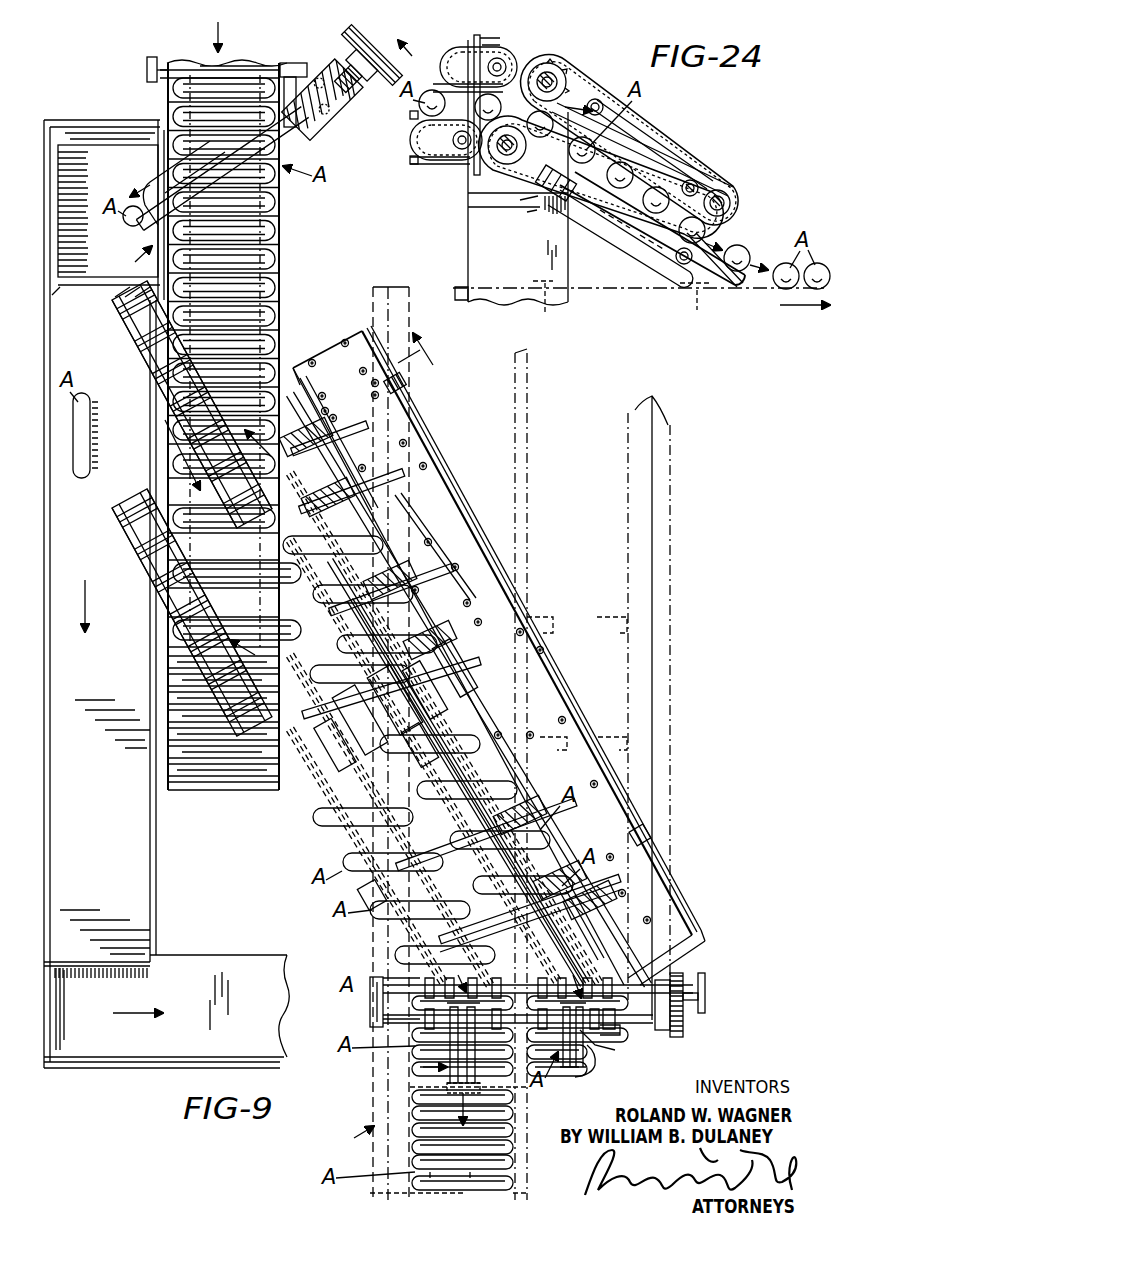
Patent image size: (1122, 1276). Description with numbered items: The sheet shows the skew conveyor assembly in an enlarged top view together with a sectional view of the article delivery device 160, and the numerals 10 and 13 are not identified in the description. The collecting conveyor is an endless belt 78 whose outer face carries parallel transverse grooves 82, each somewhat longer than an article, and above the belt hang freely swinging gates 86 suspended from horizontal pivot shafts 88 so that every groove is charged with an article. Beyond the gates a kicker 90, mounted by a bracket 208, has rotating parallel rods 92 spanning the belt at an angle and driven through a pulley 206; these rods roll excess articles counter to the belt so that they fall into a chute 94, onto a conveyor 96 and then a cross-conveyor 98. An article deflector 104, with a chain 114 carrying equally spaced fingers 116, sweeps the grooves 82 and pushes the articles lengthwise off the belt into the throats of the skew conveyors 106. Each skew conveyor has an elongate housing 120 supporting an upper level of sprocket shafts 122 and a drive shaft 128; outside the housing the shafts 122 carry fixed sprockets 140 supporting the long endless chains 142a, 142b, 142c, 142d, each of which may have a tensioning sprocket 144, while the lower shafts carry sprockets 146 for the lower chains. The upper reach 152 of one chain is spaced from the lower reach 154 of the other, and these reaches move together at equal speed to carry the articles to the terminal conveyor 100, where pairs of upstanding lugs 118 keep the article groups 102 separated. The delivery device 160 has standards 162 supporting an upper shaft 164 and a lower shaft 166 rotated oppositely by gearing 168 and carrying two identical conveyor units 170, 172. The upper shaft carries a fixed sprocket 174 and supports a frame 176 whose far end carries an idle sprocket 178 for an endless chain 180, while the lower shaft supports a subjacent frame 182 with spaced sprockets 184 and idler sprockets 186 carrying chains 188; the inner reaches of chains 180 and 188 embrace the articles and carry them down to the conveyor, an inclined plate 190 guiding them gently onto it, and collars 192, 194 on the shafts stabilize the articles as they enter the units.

In FIG. 9, the article handling apparatus 10 is at (128, 252).
In FIG. 9, the section line indicator 13 is at (371, 409).
In FIG. 9, the endless belt 78 is at (180, 62).
In FIG. 9, the transverse grooves 82 is at (280, 196).
In FIG. 9, the depending gates 86 is at (178, 94).
In FIG. 9, the horizontal pivot shafts 88 is at (150, 57).
In FIG. 9, the kicker 90 is at (322, 84).
In FIG. 9, the rotating parallel rods 92 is at (280, 141).
In FIG. 9, the chute 94 is at (95, 145).
In FIG. 9, the conveyor 96 is at (68, 122).
In FIG. 9, the cross-conveyor 98 is at (138, 1058).
In FIG. 9, the terminal conveyor 100 is at (346, 1135).
In FIG. 24, the terminal conveyor 100 is at (606, 296).
In FIG. 9, the article groups 102 is at (412, 1060).
In FIG. 9, the article deflector 104 is at (118, 333).
In FIG. 9, the skew conveyors 106 is at (484, 750).
In FIG. 24, the skew conveyors 106 is at (410, 161).
In FIG. 9, the positive drive flexible belt or chain 114 is at (158, 369).
In FIG. 9, the lugs or fingers 116 is at (143, 349).
In FIG. 9, the upstanding lugs 118 is at (553, 628).
In FIG. 24, the upstanding lugs 118 is at (549, 302).
In FIG. 9, the elongate housing 120 is at (446, 486).
In FIG. 9, the upper-level sprocket shafts 122 is at (338, 460).
In FIG. 9, the drive shaft 128 is at (296, 367).
In FIG. 9, the fixed sprockets 140 is at (318, 403).
In FIG. 24, the fixed sprockets 140 is at (506, 54).
In FIG. 9, the endless chain 142a is at (492, 776).
In FIG. 9, the endless chain 142b is at (502, 796).
In FIG. 9, the endless chain 142c is at (332, 832).
In FIG. 9, the endless chain 142d is at (347, 846).
In FIG. 9, the tensioning sprocket 144 is at (440, 661).
In FIG. 24, the fixed sprockets 146 is at (452, 158).
In FIG. 24, the upper reach 152 is at (410, 115).
In FIG. 24, the lower reach 154 is at (452, 76).
In FIG. 24, the article delivery device 160 is at (699, 160).
In FIG. 9, the standards 162 is at (370, 1000).
In FIG. 24, the standards 162 is at (468, 250).
In FIG. 9, the upper shaft 164 is at (383, 1020).
In FIG. 24, the upper shaft 164 is at (556, 72).
In FIG. 9, the lower shaft 166 is at (383, 976).
In FIG. 24, the lower shaft 166 is at (486, 166).
In FIG. 9, the gearing 168 is at (706, 1004).
In FIG. 9, the conveyor unit 170 is at (450, 1080).
In FIG. 9, the conveyor unit 172 is at (578, 1066).
In FIG. 24, the conveyor unit 172 is at (700, 156).
In FIG. 24, the fixed sprocket 174 is at (549, 70).
In FIG. 24, the frame 176 is at (665, 142).
In FIG. 24, the idle sprocket 178 is at (730, 205).
In FIG. 24, the endless chain 180 is at (700, 186).
In FIG. 24, the subjacent frame 182 is at (606, 232).
In FIG. 9, the spaced sprockets 184 is at (456, 946).
In FIG. 24, the spaced sprockets 184 is at (500, 180).
In FIG. 24, the idler sprockets 186 is at (680, 282).
In FIG. 24, the endless chains 188 is at (540, 196).
In FIG. 9, the inclined plate 190 is at (412, 1110).
In FIG. 24, the inclined plate 190 is at (731, 292).
In FIG. 9, the circular collars 192 is at (382, 984).
In FIG. 9, the circular collars 194 is at (420, 1030).
In FIG. 9, the pulley 206 is at (346, 40).
In FIG. 9, the bracket 208 is at (291, 63).